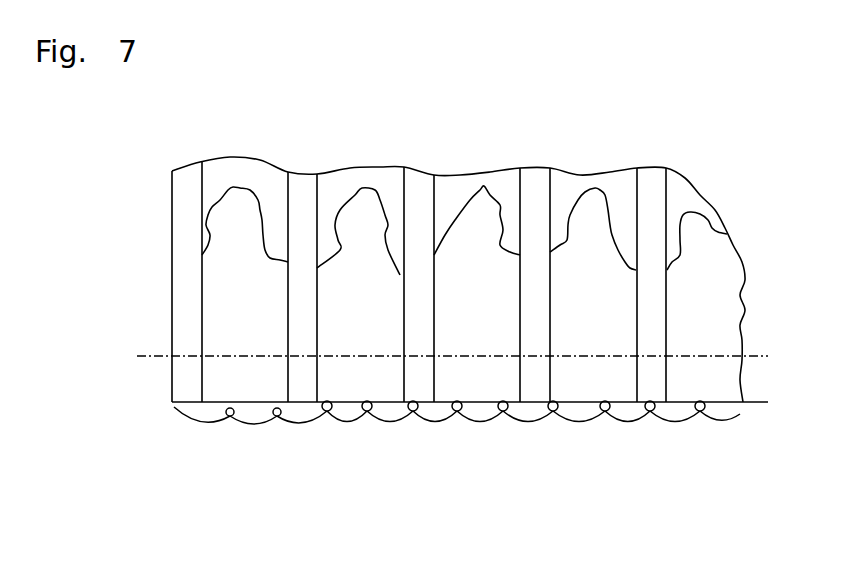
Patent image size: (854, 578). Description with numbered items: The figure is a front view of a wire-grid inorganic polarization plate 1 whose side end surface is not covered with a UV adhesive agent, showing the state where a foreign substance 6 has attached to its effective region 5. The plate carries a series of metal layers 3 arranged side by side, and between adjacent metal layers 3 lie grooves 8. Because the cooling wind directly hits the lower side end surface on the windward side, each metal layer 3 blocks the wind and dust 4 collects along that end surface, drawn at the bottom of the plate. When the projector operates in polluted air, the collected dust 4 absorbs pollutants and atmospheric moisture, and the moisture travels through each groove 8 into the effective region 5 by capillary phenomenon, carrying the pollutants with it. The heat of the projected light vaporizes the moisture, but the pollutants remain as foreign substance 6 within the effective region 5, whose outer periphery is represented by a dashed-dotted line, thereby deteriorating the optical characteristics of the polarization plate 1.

The wire-grid inorganic polarization plate 1 is at (643, 153).
The metal layer 3 is at (303, 188).
The dust 4 is at (482, 421).
The effective region 5 is at (165, 355).
The foreign substance 6 is at (480, 202).
The groove 8 is at (229, 178).